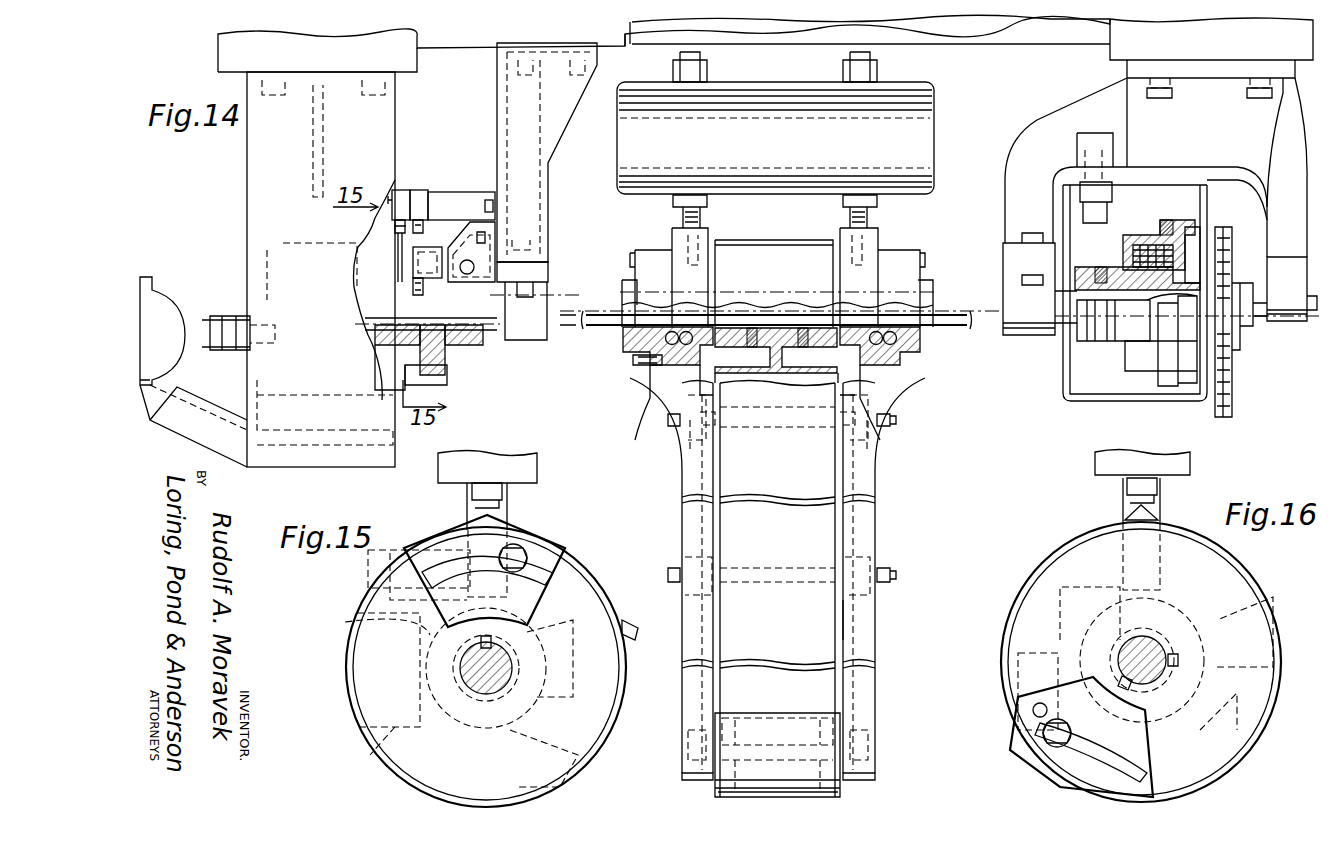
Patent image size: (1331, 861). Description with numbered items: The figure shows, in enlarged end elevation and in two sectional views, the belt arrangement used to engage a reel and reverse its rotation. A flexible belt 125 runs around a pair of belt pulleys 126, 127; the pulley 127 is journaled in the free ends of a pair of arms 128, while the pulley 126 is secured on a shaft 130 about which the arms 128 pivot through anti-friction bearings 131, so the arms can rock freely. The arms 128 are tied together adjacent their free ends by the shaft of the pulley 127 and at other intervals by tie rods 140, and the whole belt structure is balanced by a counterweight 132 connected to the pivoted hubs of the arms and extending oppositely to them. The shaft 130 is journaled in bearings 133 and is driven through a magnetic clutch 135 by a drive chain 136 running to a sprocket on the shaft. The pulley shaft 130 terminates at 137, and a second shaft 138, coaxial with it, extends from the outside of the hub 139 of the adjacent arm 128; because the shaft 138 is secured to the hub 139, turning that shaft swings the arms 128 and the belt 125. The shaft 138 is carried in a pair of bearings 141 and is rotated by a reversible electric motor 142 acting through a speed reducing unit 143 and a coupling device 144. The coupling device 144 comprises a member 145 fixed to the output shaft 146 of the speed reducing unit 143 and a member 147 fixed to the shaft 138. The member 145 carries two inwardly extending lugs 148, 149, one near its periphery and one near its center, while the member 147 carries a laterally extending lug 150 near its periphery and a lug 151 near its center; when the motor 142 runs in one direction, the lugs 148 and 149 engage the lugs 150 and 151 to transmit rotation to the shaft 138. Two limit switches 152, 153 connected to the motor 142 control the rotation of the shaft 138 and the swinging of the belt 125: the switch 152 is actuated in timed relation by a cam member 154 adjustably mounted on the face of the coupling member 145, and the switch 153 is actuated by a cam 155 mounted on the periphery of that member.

In FIG. 14, the flexible belt 125 is at (835, 525).
In FIG. 14, the belt pulley 126 is at (800, 383).
In FIG. 14, the belt pulley 127 is at (840, 782).
In FIG. 14, the arms 128 is at (680, 470).
In FIG. 14, the shaft 130 is at (940, 326).
In FIG. 14, the anti-friction bearings 131 is at (690, 340).
In FIG. 14, the counterweight 132 is at (930, 110).
In FIG. 14, the bearings 133 is at (1030, 337).
In FIG. 14, the magnetic clutch 135 is at (1171, 393).
In FIG. 14, the drive chain 136 is at (1230, 395).
In FIG. 14, the shaft termination 137 is at (650, 327).
In FIG. 14, the shaft 138 is at (568, 300).
In FIG. 14, the hub 139 is at (652, 368).
In FIG. 14, the tie rods 140 is at (885, 420).
In FIG. 14, the bearings 141 is at (546, 320).
In FIG. 14, the reversible electric motor 142 is at (163, 300).
In FIG. 14, the speed reducing unit 143 is at (340, 245).
In FIG. 14, the coupling device 144 is at (420, 388).
In FIG. 14, the coupling member 145 is at (405, 347).
In FIG. 16, the coupling member 145 is at (1237, 760).
In FIG. 14, the output shaft 146 is at (388, 322).
In FIG. 15, the output shaft 146 is at (478, 682).
In FIG. 16, the output shaft 146 is at (1152, 655).
In FIG. 14, the coupling member 147 is at (455, 352).
In FIG. 14, the lug 148 is at (430, 350).
In FIG. 15, the lug 148 is at (395, 723).
In FIG. 16, the lug 148 is at (1082, 610).
In FIG. 15, the lug 149 is at (578, 668).
In FIG. 16, the lug 149 is at (1150, 666).
In FIG. 14, the lug 150 is at (450, 372).
In FIG. 15, the lug 150 is at (565, 745).
In FIG. 16, the lug 150 is at (1235, 600).
In FIG. 15, the lug 151 is at (413, 650).
In FIG. 16, the lug 151 is at (1130, 741).
In FIG. 14, the limit switch 152 is at (403, 190).
In FIG. 14, the limit switch 153 is at (470, 215).
In FIG. 14, the cam member 154 is at (393, 237).
In FIG. 15, the cam member 154 is at (476, 519).
In FIG. 16, the cam member 154 is at (1060, 785).
In FIG. 14, the cam 155 is at (413, 285).
In FIG. 15, the cam 155 is at (632, 625).
In FIG. 16, the cam 155 is at (1128, 520).